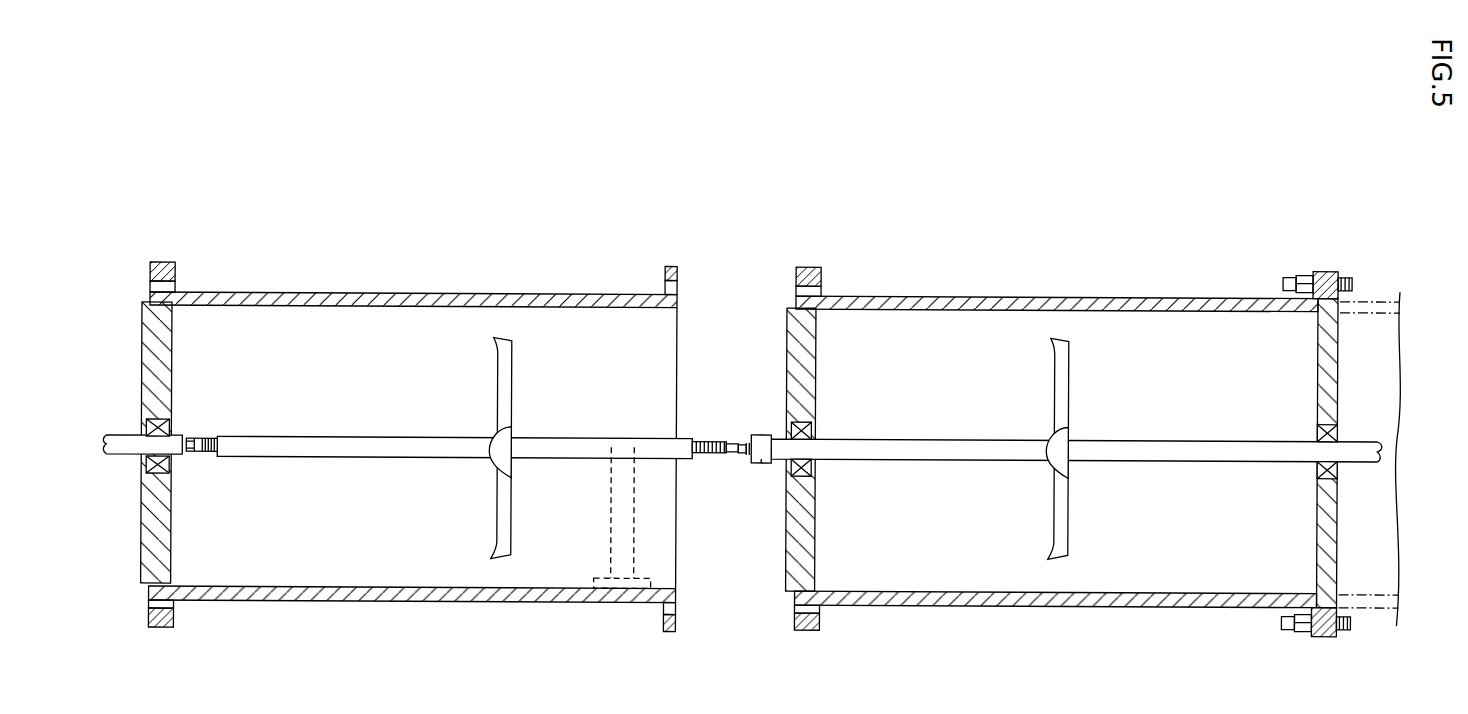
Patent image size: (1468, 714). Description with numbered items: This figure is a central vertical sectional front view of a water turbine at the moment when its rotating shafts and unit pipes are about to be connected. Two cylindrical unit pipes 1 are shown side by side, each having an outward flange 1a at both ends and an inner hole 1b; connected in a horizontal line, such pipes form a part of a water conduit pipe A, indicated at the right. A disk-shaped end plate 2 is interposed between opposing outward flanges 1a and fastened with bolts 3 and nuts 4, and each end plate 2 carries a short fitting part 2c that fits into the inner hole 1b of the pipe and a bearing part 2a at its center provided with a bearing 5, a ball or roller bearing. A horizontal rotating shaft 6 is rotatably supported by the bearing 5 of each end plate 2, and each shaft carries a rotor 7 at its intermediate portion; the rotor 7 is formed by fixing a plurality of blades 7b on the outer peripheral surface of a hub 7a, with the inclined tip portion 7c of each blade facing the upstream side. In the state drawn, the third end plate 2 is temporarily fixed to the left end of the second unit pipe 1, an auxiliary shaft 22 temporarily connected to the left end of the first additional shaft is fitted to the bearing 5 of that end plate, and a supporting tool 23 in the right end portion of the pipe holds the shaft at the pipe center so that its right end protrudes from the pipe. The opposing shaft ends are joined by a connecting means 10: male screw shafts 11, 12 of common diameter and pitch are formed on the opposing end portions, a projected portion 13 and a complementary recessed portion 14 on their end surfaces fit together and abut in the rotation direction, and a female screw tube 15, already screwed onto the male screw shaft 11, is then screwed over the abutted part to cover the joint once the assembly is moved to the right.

The unit pipe 1 is at (332, 292).
The outward flange 1a is at (168, 262).
The inner hole 1b is at (425, 292).
The end plate 2 is at (172, 372).
The bearing part 2a is at (142, 418).
The fitting part 2c is at (155, 300).
The bolt 3 is at (1350, 274).
The nut 4 is at (1302, 271).
The bearing 5 is at (148, 460).
The rotating shaft 6 is at (328, 434).
The rotor 7 is at (512, 370).
The hub 7a is at (512, 428).
The blade 7b is at (498, 395).
The inclined tip portion 7c is at (493, 339).
The connecting means 10 is at (762, 428).
The male screw shaft 11 is at (208, 453).
The male screw shaft 12 is at (709, 437).
The projected portion 13 is at (735, 457).
The recessed portion 14 is at (745, 458).
The female screw tube 15 is at (764, 461).
The auxiliary shaft 22 is at (123, 456).
The supporting tool 23 is at (612, 505).
The water conduit pipe A is at (1387, 282).